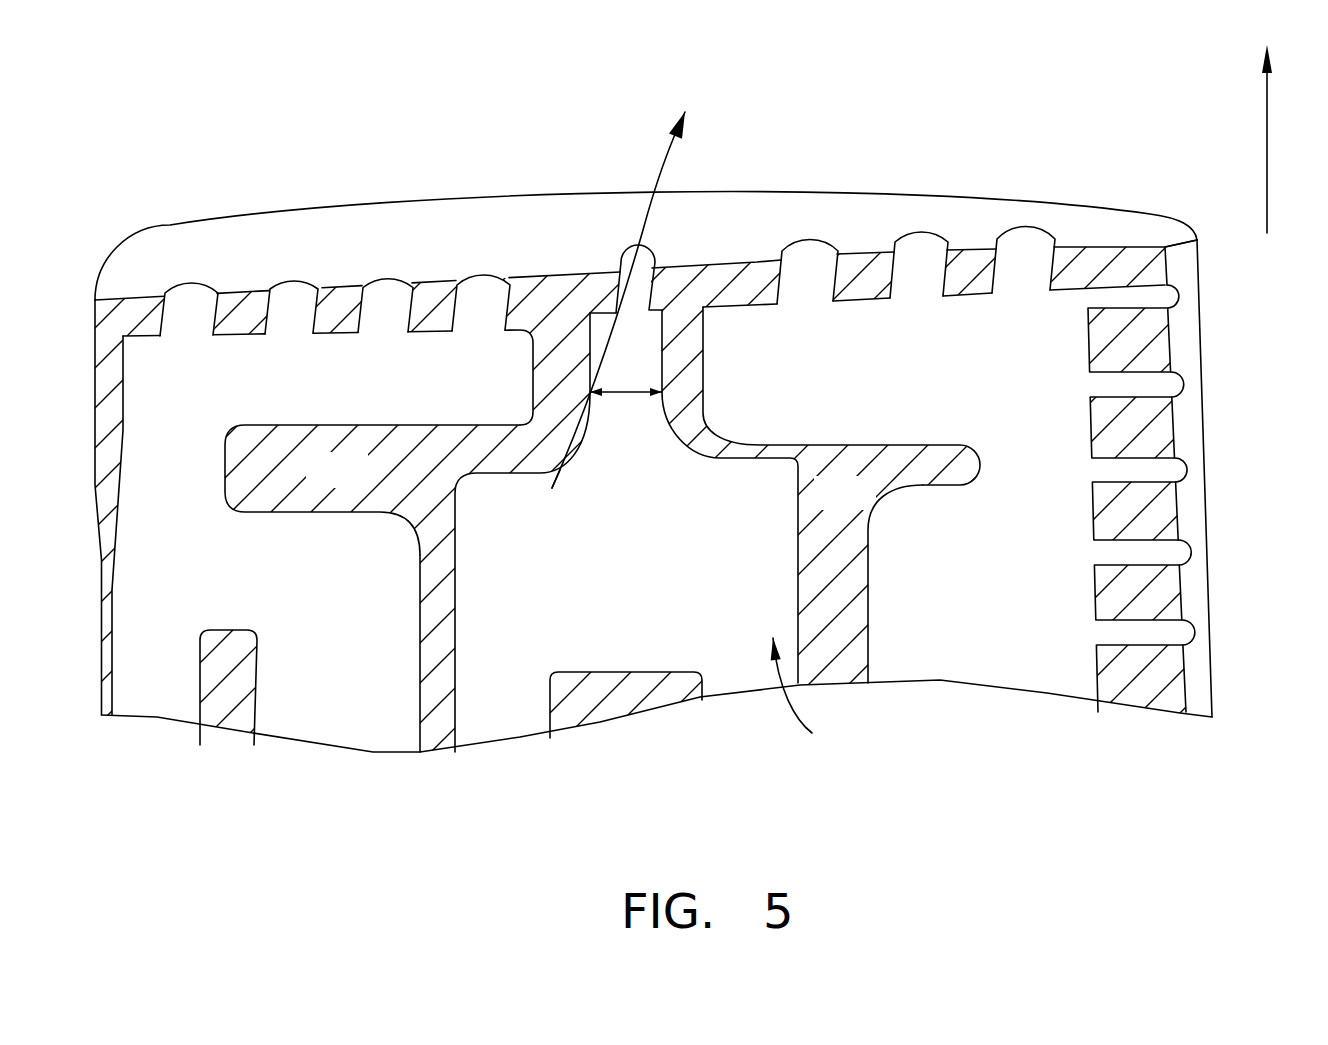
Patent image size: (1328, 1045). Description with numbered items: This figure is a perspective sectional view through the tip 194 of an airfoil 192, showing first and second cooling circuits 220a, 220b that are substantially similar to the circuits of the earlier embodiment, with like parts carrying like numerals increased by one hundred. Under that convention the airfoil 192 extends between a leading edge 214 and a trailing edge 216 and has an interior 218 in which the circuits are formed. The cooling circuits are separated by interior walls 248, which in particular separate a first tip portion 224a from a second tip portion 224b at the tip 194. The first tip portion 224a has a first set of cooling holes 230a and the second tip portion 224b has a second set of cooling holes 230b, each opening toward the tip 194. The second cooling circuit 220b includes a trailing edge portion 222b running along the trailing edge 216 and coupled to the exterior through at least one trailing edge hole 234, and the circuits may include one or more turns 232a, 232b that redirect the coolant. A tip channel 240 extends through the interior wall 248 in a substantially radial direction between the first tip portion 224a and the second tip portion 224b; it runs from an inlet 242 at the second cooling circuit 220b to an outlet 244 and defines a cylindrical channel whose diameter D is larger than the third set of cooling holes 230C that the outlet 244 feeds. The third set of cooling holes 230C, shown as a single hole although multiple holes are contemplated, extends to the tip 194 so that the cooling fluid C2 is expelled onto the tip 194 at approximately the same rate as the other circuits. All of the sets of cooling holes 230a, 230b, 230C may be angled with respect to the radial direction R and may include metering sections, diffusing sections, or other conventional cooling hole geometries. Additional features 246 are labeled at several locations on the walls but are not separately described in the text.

The airfoil 192 is at (930, 195).
The tip 194 is at (433, 223).
The leading edge 214 is at (95, 453).
The trailing edge 216 is at (1190, 510).
The interior 218 is at (819, 694).
The first cooling circuit 220a is at (153, 627).
The second cooling circuit 220b is at (1045, 638).
The trailing edge portion 222b is at (1008, 610).
The first tip portion 224a is at (349, 393).
The second tip portion 224b is at (945, 385).
The first set of cooling holes 230a is at (290, 295).
The second set of cooling holes 230b is at (915, 248).
The third set of cooling holes 230C is at (610, 315).
The turn 232a is at (316, 608).
The turn 232b is at (631, 633).
The trailing edge hole 234 is at (1177, 633).
The tip channel 240 is at (587, 313).
The inlet 242 is at (625, 432).
The outlet 244 is at (627, 280).
The ribs / grooves 246 is at (1040, 403).
The interior wall 248 is at (363, 485).
The cooling fluid C2 is at (572, 470).
The diameter D is at (623, 393).
The radial direction R is at (1268, 162).